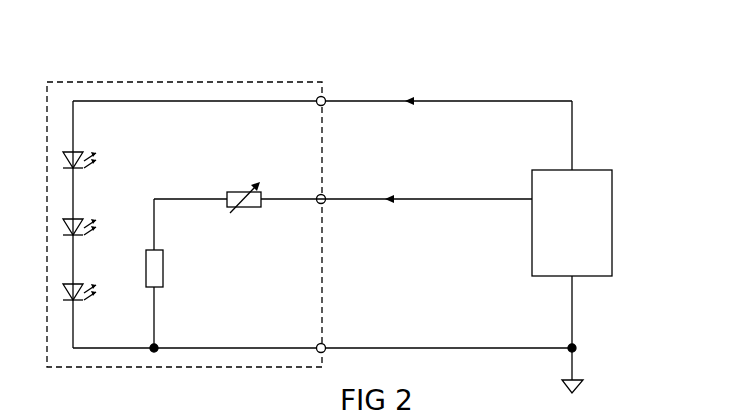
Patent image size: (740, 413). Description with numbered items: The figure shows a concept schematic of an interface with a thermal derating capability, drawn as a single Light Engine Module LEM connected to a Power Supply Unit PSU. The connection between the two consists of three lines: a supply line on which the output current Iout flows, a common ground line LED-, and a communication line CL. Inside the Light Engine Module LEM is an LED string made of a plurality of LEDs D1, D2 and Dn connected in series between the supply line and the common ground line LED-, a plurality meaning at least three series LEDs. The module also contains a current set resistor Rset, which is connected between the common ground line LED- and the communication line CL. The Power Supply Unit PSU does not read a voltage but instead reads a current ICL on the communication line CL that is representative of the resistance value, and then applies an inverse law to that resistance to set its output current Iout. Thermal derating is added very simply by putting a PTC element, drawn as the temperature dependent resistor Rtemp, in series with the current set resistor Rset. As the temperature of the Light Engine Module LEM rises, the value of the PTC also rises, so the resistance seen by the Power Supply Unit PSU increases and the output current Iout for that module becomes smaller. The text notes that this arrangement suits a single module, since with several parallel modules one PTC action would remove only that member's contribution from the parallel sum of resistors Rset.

The Light Engine Module LEM is at (180, 76).
The LED D1 is at (85, 147).
The LED D2 is at (85, 215).
The LED Dn is at (85, 281).
The current set resistor Rset is at (175, 273).
The temperature dependent resistor Rtemp is at (212, 186).
The PTC element PTC is at (242, 232).
The Power Supply Unit PSU is at (572, 223).
The common ground line LED- is at (423, 335).
The output current Iout is at (418, 123).
The communication line CL is at (396, 190).
The communication line current ICL is at (391, 219).